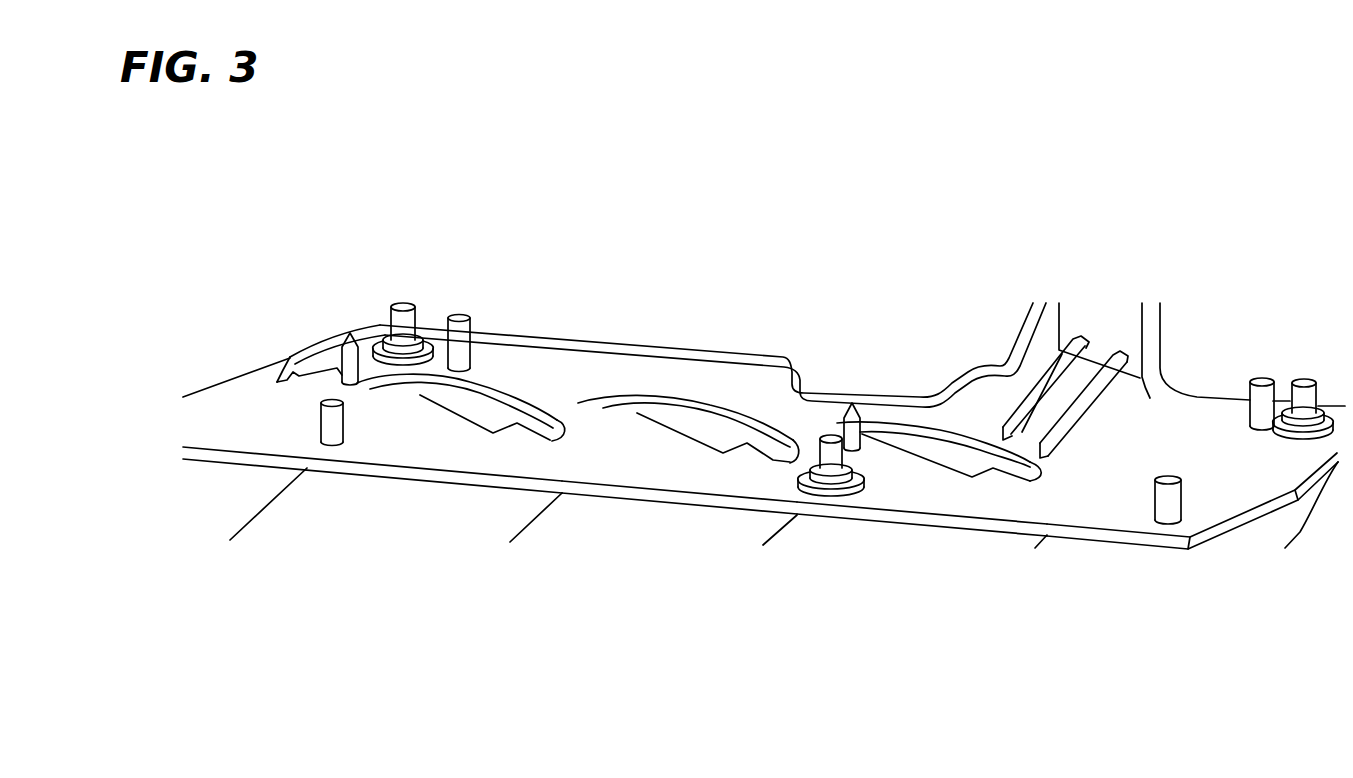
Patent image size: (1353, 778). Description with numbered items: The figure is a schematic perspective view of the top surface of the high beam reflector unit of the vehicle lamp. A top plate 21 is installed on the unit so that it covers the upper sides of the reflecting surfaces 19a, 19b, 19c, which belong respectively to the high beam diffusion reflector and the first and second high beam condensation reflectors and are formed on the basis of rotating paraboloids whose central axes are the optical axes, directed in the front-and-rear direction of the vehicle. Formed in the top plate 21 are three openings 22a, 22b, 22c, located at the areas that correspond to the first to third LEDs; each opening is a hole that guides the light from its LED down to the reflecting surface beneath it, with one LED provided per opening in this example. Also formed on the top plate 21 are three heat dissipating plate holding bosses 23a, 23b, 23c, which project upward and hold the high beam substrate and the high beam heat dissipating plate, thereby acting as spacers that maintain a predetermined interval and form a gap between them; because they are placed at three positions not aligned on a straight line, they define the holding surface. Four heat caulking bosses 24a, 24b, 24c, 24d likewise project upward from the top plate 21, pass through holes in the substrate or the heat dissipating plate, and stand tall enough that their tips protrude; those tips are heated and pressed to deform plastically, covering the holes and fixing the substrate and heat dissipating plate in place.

The reflecting surface 19a is at (390, 515).
The reflecting surface 19b is at (642, 527).
The reflecting surface 19c is at (907, 537).
The top plate 21 is at (1100, 507).
The opening 22a is at (480, 417).
The opening 22b is at (710, 435).
The opening 22c is at (955, 453).
The heat dissipating plate holding boss 23a is at (390, 327).
The heat dissipating plate holding boss 23b is at (827, 482).
The heat dissipating plate holding boss 23c is at (1282, 398).
The heat caulking boss 24a is at (463, 335).
The heat caulking boss 24b is at (328, 418).
The heat caulking boss 24c is at (1172, 503).
The heat caulking boss 24d is at (1255, 395).